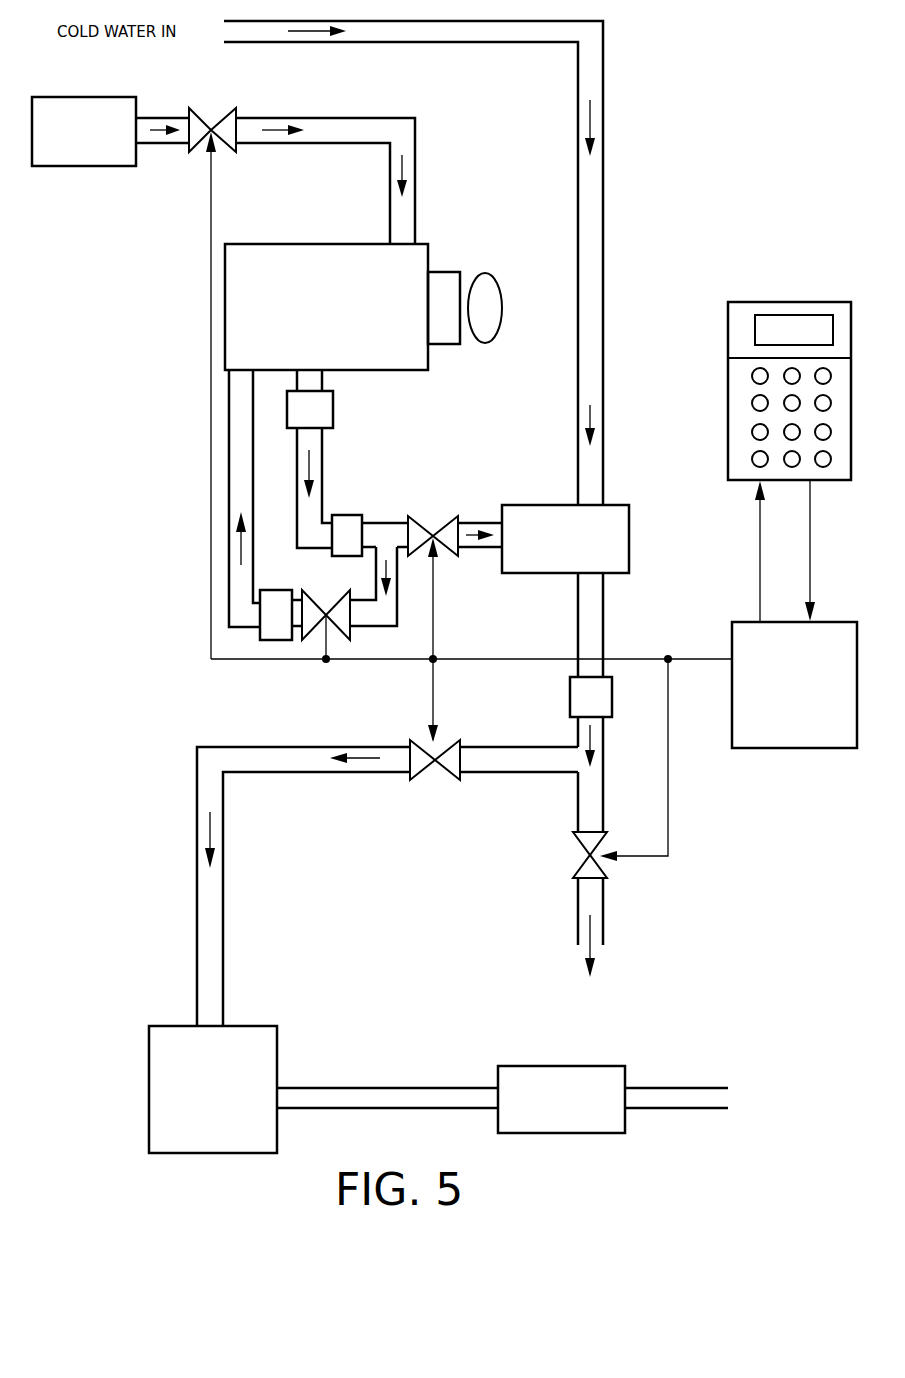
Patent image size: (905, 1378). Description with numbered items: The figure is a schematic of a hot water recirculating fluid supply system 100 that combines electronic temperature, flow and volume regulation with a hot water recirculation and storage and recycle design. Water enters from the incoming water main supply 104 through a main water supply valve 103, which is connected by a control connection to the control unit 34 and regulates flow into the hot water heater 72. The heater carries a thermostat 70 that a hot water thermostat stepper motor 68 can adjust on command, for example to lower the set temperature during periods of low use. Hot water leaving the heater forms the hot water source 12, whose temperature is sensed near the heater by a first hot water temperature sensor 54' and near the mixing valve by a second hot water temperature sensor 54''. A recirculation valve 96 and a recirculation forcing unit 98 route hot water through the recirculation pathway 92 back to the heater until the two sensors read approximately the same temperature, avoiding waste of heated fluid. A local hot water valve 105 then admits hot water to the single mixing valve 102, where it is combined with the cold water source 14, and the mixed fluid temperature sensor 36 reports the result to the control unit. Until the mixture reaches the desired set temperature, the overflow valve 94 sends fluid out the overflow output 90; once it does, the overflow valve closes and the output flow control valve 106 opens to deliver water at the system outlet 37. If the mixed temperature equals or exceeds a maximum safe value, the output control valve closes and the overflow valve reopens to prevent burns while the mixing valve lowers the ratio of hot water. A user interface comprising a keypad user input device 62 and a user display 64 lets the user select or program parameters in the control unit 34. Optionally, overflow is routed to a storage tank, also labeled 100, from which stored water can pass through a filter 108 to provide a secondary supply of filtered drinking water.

The cold water source 14 is at (333, 44).
The main water supply valve 103 is at (189, 108).
The incoming water main supply 104 is at (104, 166).
The hot water heater 72 is at (430, 371).
The thermostat 70 is at (450, 271).
The hot water thermostat stepper motor 68 is at (503, 300).
The recirculation pathway 92 is at (229, 466).
The first hot water temperature sensor 54' is at (359, 401).
The hot water source 12 is at (323, 461).
The second hot water temperature sensor 54'' is at (373, 511).
The recirculation valve 96 is at (343, 633).
The recirculation forcing unit 98 is at (272, 590).
The local hot water valve 105 is at (440, 522).
The mixing valve 102 is at (630, 518).
The mixed fluid temperature sensor 36 is at (568, 688).
The overflow valve 94 is at (420, 746).
The overflow output 90 is at (224, 905).
The output flow control valve 106 is at (580, 862).
The system outlet 37 is at (597, 962).
The user input device 62 is at (728, 396).
The user display 64 is at (823, 313).
The control unit 34 is at (808, 749).
The hot water recirculating fluid supply system 100 is at (248, 1155).
The filter 108 is at (567, 1066).